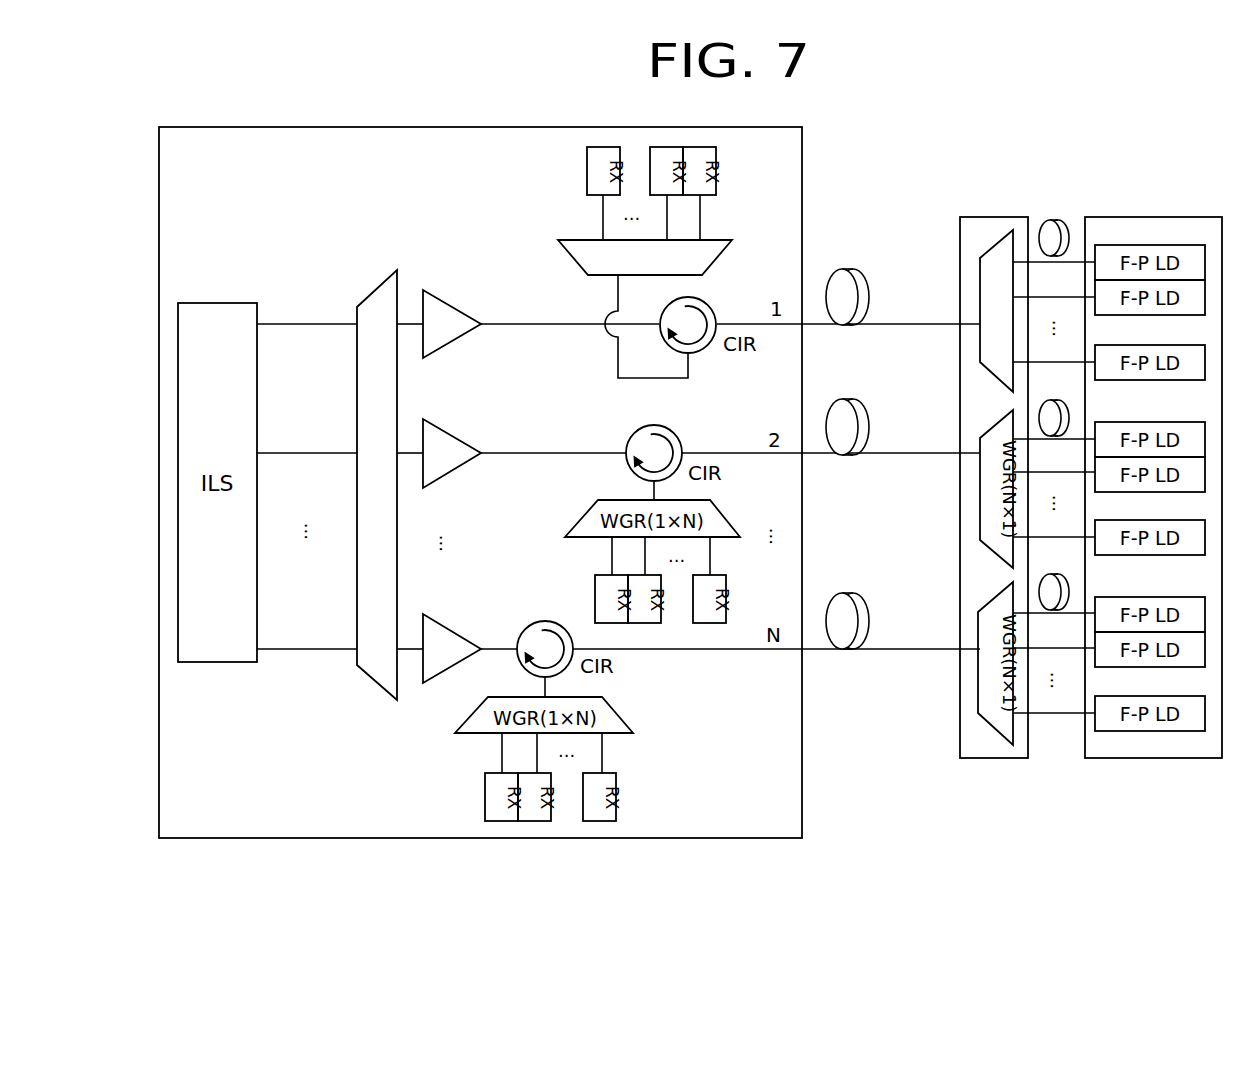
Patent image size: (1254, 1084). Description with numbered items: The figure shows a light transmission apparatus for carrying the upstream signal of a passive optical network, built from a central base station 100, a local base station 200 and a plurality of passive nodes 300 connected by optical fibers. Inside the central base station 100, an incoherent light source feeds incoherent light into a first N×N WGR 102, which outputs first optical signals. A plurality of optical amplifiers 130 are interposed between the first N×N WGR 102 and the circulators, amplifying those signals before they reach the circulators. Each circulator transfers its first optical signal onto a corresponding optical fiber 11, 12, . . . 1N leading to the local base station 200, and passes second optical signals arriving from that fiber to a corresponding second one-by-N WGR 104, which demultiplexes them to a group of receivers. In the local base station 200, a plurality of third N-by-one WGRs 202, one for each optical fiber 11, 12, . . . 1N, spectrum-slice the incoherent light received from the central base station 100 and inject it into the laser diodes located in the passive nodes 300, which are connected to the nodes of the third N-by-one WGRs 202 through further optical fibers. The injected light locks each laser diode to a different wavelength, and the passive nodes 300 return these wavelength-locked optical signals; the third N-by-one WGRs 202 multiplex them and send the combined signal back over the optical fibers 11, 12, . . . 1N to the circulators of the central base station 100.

The central base station 100 is at (803, 154).
The first N×N WGR 102 is at (373, 683).
The second 1×N WGR 104 is at (568, 240).
The optical amplifier 130 is at (452, 303).
The optical fiber 11 is at (868, 277).
The optical fiber 12 is at (866, 405).
The optical fiber 1N is at (866, 598).
The local base station 200 is at (1022, 217).
The third N×1 WGR 202 is at (992, 250).
The passive node 300 is at (1213, 217).